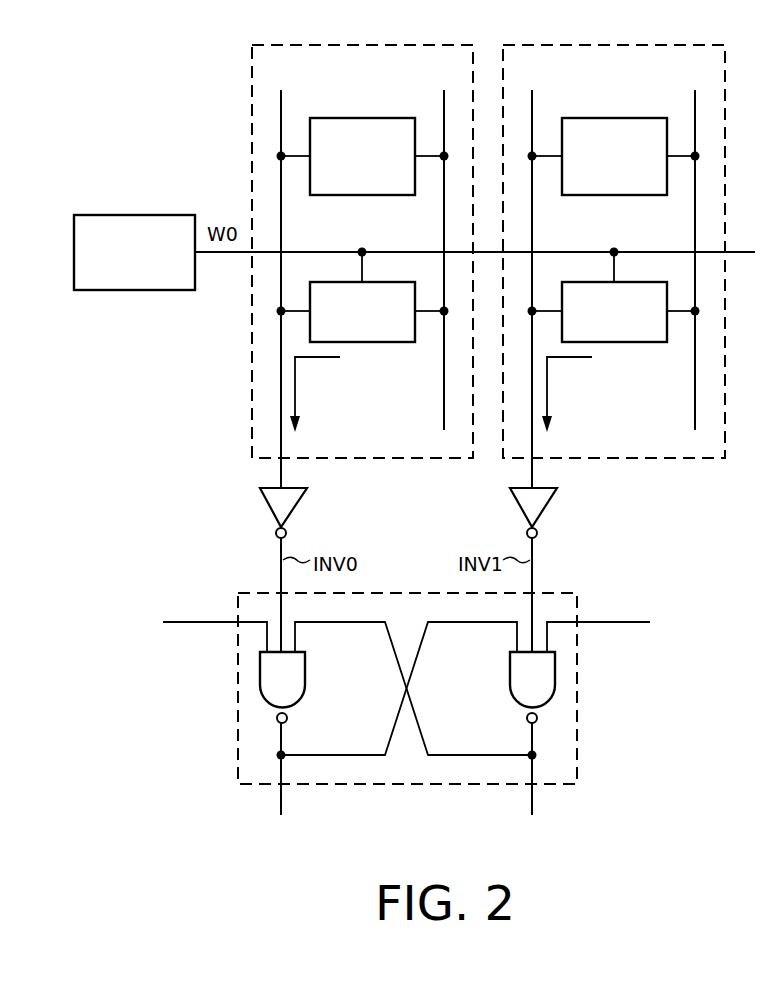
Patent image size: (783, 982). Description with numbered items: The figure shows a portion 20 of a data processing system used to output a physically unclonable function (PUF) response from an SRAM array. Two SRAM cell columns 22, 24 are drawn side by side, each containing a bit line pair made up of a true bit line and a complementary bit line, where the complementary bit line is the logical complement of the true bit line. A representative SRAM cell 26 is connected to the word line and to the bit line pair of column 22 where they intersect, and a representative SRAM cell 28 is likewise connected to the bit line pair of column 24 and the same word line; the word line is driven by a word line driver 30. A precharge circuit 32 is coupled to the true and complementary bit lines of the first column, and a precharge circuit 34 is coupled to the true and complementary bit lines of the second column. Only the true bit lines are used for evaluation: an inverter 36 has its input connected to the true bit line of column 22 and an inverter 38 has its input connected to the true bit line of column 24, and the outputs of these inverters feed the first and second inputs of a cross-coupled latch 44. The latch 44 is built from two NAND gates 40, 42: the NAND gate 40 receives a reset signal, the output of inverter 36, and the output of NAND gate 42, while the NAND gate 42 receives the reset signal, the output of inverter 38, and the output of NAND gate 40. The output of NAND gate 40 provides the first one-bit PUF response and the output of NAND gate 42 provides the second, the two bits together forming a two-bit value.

The portion 20 is at (172, 44).
The SRAM cell column 22 is at (252, 136).
The SRAM cell column 24 is at (725, 125).
The SRAM cell 26 is at (380, 343).
The SRAM cell 28 is at (632, 343).
The word line driver 30 is at (101, 214).
The precharge circuit 32 is at (344, 196).
The precharge circuit 34 is at (596, 196).
The inverter 36 is at (264, 508).
The inverter 38 is at (515, 508).
The NAND gate 40 is at (306, 676).
The NAND gate 42 is at (509, 676).
The cross-coupled latch 44 is at (577, 733).